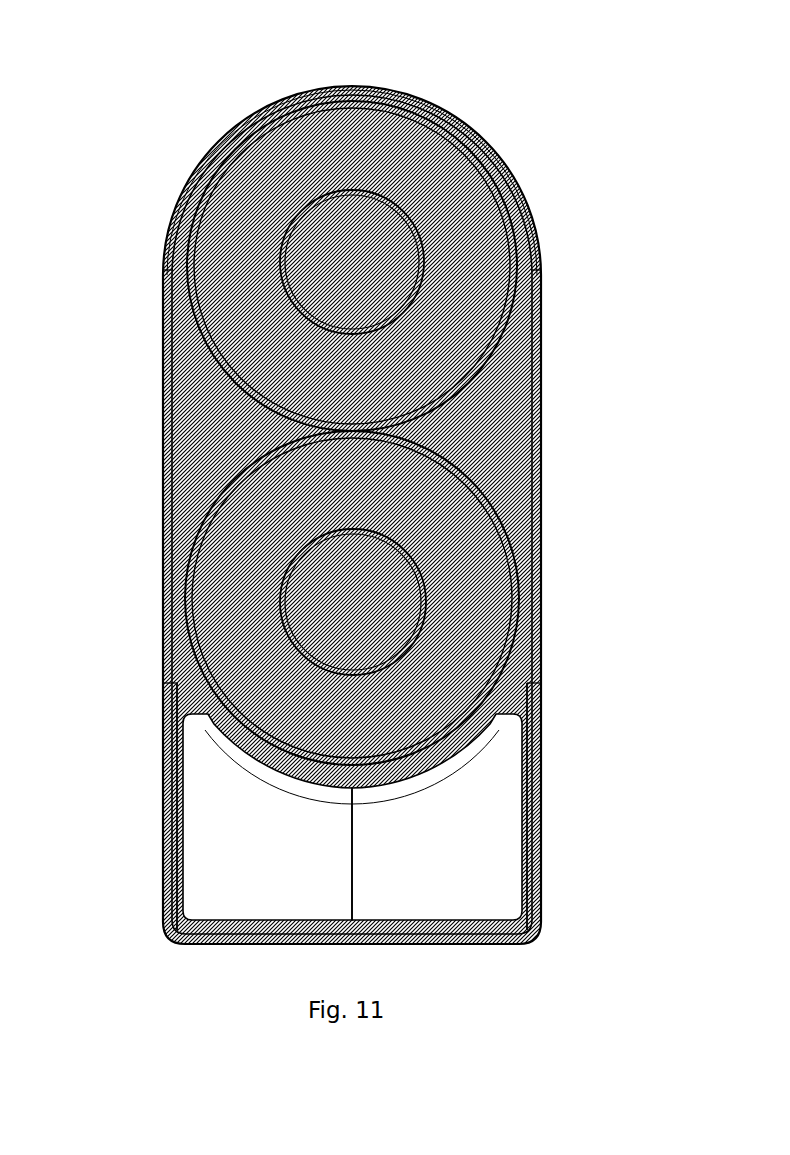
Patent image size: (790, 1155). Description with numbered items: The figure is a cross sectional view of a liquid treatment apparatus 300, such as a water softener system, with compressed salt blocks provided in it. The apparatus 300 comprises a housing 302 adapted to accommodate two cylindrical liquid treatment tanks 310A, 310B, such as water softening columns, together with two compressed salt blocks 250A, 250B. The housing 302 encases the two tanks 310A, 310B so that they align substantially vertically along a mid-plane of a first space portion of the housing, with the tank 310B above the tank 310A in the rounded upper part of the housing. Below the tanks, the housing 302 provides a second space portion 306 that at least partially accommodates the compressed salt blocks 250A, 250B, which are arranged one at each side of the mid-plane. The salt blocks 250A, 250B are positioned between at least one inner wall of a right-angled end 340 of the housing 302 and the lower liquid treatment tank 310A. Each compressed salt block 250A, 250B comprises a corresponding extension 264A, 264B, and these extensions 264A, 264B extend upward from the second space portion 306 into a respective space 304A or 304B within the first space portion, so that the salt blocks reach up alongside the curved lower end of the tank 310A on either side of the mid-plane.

The liquid treatment apparatus 300 is at (578, 93).
The housing 302 is at (541, 357).
The space 304A is at (188, 692).
The space 304B is at (513, 685).
The second space portion 306 is at (176, 835).
The liquid treatment tank 310A is at (487, 570).
The liquid treatment tank 310B is at (490, 258).
The extension 264A is at (195, 763).
The extension 264B is at (505, 763).
The compressed salt block 250A is at (235, 900).
The compressed salt block 250B is at (465, 892).
The right-angled end 340 is at (412, 944).